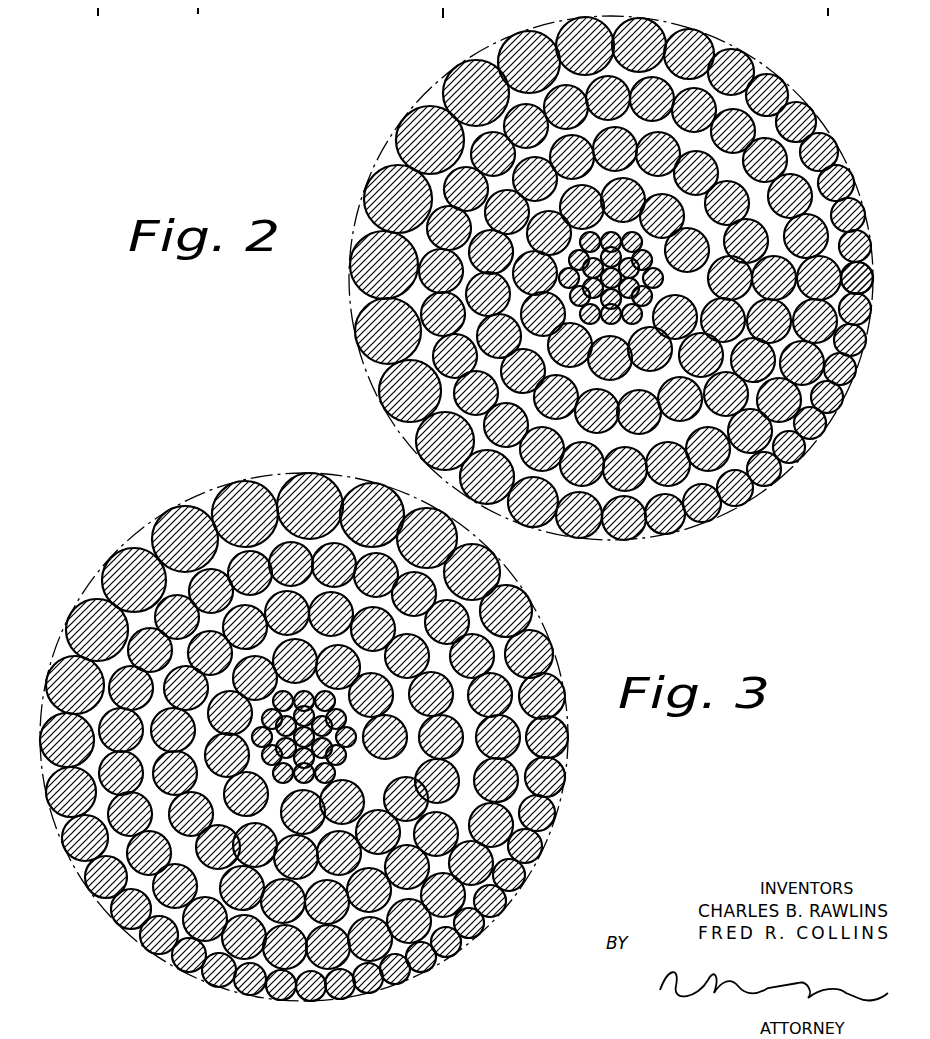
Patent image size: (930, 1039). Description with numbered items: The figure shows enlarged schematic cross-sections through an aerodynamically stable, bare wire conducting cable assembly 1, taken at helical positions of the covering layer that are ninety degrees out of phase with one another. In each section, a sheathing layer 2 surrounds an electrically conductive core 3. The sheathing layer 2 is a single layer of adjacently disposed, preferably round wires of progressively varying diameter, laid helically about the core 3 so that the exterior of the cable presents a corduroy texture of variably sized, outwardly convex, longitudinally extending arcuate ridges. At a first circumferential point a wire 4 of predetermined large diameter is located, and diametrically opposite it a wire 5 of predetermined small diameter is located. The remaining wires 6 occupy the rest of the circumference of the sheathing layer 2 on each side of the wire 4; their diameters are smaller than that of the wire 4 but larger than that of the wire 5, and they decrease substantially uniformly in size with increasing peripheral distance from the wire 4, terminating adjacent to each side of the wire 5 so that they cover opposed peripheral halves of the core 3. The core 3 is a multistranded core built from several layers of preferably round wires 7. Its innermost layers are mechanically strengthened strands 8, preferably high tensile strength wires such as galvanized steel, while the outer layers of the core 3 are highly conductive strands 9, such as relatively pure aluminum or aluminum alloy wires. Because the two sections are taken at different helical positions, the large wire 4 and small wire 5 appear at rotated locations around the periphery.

In FIG. 2, the conducting cable assembly 1 is at (388, 97).
In FIG. 3, the conducting cable assembly 1 is at (116, 518).
In FIG. 2, the sheathing layer 2 is at (378, 135).
In FIG. 3, the sheathing layer 2 is at (90, 580).
In FIG. 2, the electrically conductive core 3 is at (420, 228).
In FIG. 3, the electrically conductive core 3 is at (194, 542).
In FIG. 2, the large diameter wire 4 is at (352, 278).
In FIG. 3, the large diameter wire 4 is at (256, 480).
In FIG. 2, the small diameter wire 5 is at (862, 268).
In FIG. 3, the small diameter wire 5 is at (342, 990).
In FIG. 2, the remaining wires 6 is at (776, 95).
In FIG. 3, the remaining wires 6 is at (548, 662).
In FIG. 2, the core wires 7 is at (427, 314).
In FIG. 3, the core wires 7 is at (482, 606).
In FIG. 2, the mechanically strengthened strands 8 is at (374, 360).
In FIG. 3, the mechanically strengthened strands 8 is at (522, 793).
In FIG. 2, the highly conductive strands 9 is at (845, 360).
In FIG. 3, the highly conductive strands 9 is at (152, 880).